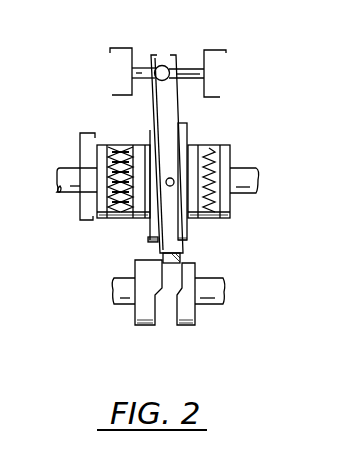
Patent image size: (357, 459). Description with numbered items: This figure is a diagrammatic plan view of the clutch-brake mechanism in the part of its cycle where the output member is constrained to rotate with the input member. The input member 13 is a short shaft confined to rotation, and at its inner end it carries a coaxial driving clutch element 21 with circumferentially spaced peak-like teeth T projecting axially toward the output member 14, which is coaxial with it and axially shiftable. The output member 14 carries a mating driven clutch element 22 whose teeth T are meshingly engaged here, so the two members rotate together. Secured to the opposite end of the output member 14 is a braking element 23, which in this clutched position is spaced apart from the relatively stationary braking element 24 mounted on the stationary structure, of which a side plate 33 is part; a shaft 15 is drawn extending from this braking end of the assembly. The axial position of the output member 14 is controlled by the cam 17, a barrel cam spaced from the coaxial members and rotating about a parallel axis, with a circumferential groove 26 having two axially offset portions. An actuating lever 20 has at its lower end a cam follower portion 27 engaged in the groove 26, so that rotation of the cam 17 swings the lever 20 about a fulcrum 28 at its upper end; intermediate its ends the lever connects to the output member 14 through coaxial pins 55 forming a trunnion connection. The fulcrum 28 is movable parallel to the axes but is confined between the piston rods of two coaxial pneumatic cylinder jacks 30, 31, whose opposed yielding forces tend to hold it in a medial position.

The input member 13 is at (242, 168).
The output member 14 is at (195, 145).
The shaft 15 is at (72, 187).
The cam 17 is at (195, 315).
The actuating lever 20 is at (180, 223).
The driving clutch element 21 is at (220, 148).
The driven clutch element 22 is at (207, 147).
The braking element 23 is at (128, 148).
The stationary braking element 24 is at (113, 150).
The circumferential groove 26 is at (175, 322).
The cam follower portion 27 is at (186, 262).
The fulcrum 28 is at (160, 70).
The pneumatic cylinder jack 30 is at (115, 48).
The pneumatic cylinder jack 31 is at (215, 50).
The side plate 33 is at (78, 222).
The coaxial pins 55 is at (165, 190).
The teeth T is at (117, 147).